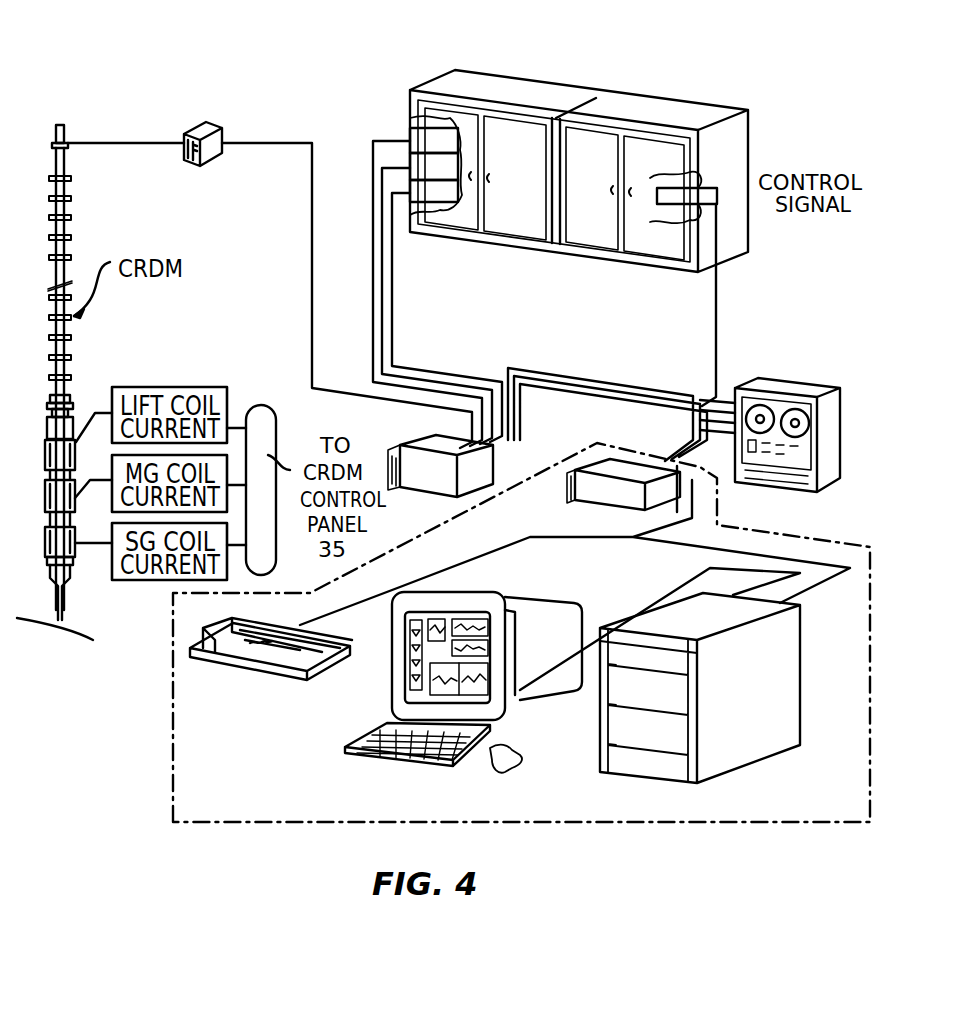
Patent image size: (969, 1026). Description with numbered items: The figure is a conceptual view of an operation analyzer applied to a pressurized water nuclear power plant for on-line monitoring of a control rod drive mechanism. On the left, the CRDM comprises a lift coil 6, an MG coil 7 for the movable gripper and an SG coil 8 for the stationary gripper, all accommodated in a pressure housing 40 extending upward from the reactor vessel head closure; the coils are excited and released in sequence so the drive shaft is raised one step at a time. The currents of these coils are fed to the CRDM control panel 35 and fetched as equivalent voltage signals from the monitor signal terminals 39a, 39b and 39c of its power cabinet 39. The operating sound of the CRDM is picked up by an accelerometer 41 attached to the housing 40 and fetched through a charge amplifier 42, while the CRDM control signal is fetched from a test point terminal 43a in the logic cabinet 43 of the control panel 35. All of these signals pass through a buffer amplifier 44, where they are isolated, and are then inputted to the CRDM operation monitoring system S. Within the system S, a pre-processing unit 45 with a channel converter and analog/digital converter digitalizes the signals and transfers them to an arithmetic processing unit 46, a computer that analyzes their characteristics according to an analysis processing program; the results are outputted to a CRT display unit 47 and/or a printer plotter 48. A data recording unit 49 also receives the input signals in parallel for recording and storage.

The lift coil 6 is at (44, 452).
The MG coil 7 is at (44, 500).
The SG coil 8 is at (44, 540).
The control panel 35 is at (551, 78).
The power cabinet 39 is at (436, 86).
The monitor signal terminal 39a is at (404, 132).
The monitor signal terminal 39b is at (405, 165).
The monitor signal terminal 39c is at (380, 190).
The pressure housing 40 is at (67, 158).
The accelerometer 41 is at (62, 130).
The charge amplifier 42 is at (218, 126).
The logic cabinet 43 is at (748, 124).
The test point terminal 43a is at (700, 186).
The buffer amplifier 44 is at (405, 448).
The pre-processing unit 45 is at (590, 462).
The arithmetic processing unit 46 is at (790, 666).
The CRT display unit 47 is at (496, 592).
The printer plotter 48 is at (228, 670).
The data recording unit 49 is at (822, 386).
The CRDM operation monitoring system S is at (236, 824).